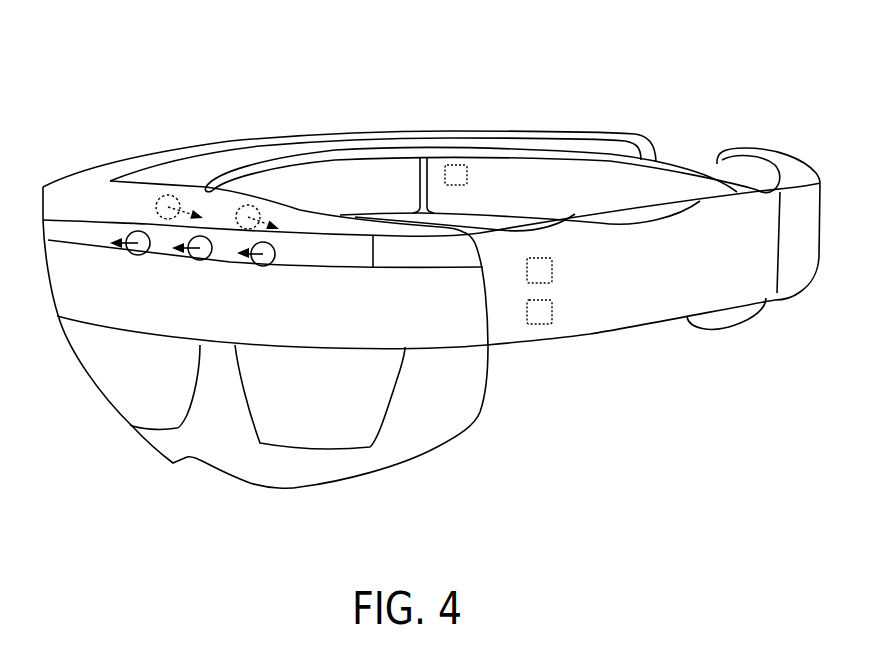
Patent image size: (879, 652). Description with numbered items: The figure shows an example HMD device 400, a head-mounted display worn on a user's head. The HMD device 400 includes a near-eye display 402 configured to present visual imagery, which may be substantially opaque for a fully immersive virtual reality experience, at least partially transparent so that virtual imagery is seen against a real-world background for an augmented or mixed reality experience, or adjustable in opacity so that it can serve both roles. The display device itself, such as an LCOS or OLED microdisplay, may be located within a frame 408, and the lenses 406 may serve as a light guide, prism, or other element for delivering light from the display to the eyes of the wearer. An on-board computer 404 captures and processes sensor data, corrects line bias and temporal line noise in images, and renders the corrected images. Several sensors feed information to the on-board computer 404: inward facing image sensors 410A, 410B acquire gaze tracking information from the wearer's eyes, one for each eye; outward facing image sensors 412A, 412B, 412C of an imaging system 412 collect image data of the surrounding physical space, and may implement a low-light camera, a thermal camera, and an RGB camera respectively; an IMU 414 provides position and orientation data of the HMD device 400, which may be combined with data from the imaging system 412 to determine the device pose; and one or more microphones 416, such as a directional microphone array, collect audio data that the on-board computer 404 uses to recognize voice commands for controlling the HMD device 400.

The HMD device 400 is at (575, 70).
The near-eye display 402 is at (68, 411).
The on-board computer 404 is at (551, 259).
The lenses 406 is at (251, 416).
The frame 408 is at (513, 348).
The inward facing image sensor 410A is at (257, 208).
The inward facing image sensor 410B is at (157, 203).
The imaging system 412 is at (195, 320).
The outward facing image sensor 412A is at (263, 266).
The outward facing image sensor 412B is at (200, 260).
The outward facing image sensor 412C is at (138, 255).
The IMU 414 is at (551, 303).
The microphones 416 is at (456, 165).